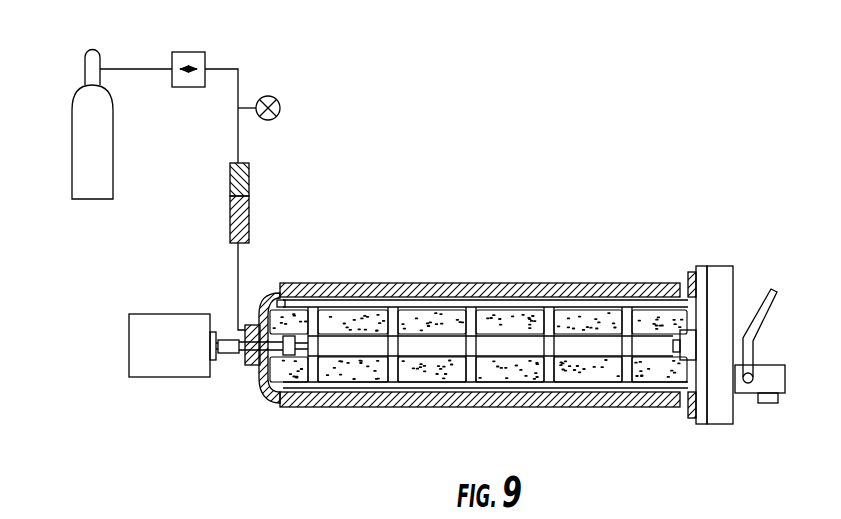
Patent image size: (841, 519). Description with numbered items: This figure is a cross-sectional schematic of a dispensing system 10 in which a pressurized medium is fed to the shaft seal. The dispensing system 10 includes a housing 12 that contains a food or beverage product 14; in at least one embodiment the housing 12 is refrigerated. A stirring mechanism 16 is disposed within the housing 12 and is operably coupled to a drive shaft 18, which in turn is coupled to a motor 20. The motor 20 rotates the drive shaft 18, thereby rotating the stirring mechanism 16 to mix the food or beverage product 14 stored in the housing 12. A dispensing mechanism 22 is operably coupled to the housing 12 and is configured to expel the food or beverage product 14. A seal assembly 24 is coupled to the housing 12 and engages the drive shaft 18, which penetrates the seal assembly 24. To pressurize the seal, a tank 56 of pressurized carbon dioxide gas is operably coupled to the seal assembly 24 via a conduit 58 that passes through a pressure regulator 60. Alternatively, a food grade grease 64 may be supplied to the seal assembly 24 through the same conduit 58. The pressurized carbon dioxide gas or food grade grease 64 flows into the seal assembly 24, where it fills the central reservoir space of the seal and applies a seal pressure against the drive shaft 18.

The dispensing system 10 is at (534, 296).
The housing 12 is at (415, 283).
The food or beverage product 14 is at (520, 322).
The stirring mechanism 16 is at (445, 345).
The drive shaft 18 is at (293, 338).
The motor 20 is at (157, 314).
The dispensing mechanism 22 is at (784, 315).
The seal assembly 24 is at (255, 326).
The tank 56 is at (72, 145).
The conduit 58 is at (238, 280).
The pressure regulator 60 is at (200, 60).
The food grade grease 64 is at (230, 190).